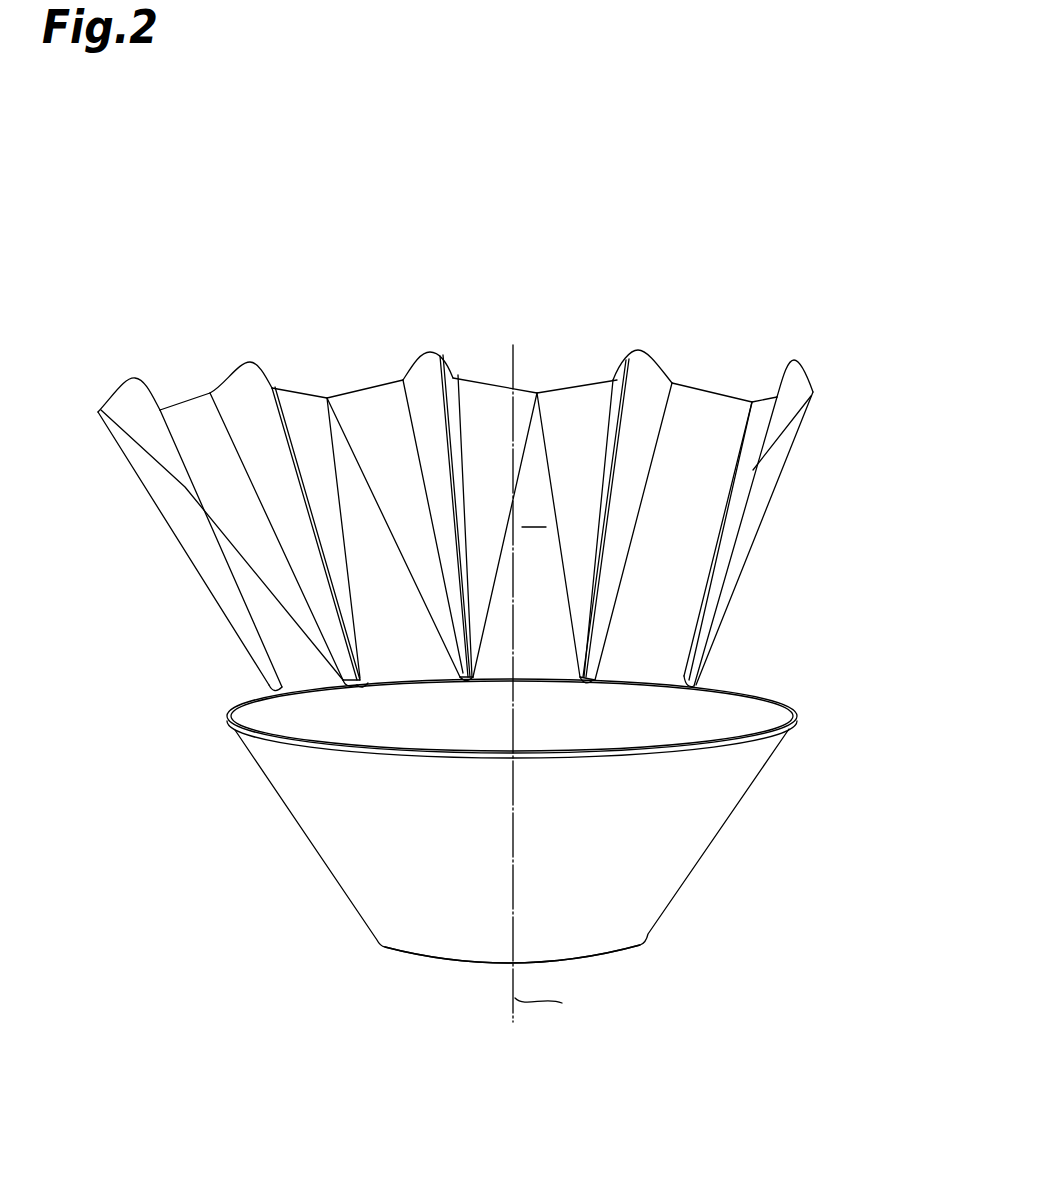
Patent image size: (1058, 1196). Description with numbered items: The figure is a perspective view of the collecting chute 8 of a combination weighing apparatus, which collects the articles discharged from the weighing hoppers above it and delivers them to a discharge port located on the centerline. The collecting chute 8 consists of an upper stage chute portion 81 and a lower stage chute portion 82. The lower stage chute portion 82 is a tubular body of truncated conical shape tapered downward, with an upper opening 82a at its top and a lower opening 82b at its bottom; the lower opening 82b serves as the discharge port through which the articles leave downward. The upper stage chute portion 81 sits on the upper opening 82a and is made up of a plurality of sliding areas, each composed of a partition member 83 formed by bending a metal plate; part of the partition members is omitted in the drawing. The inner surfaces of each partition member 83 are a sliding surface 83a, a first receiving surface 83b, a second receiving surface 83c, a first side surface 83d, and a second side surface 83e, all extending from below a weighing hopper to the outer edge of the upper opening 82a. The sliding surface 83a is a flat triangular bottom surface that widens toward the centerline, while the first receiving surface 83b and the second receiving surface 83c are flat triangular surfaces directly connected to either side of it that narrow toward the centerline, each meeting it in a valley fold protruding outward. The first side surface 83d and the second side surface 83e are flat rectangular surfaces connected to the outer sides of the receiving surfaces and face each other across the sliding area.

The collecting chute 8 is at (800, 197).
The upper stage chute portion 81 is at (868, 349).
The lower stage chute portion 82 is at (693, 847).
The upper opening 82a is at (765, 708).
The lower opening 82b is at (450, 962).
The partition member 83 is at (187, 400).
The sliding surface 83a is at (545, 658).
The first receiving surface 83b is at (483, 396).
The second receiving surface 83c is at (578, 394).
The first side surface 83d is at (445, 354).
The second side surface 83e is at (612, 366).